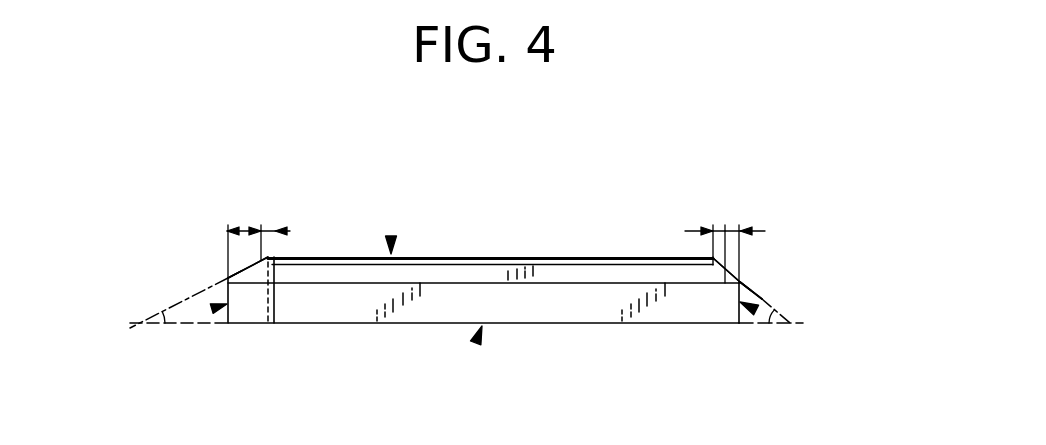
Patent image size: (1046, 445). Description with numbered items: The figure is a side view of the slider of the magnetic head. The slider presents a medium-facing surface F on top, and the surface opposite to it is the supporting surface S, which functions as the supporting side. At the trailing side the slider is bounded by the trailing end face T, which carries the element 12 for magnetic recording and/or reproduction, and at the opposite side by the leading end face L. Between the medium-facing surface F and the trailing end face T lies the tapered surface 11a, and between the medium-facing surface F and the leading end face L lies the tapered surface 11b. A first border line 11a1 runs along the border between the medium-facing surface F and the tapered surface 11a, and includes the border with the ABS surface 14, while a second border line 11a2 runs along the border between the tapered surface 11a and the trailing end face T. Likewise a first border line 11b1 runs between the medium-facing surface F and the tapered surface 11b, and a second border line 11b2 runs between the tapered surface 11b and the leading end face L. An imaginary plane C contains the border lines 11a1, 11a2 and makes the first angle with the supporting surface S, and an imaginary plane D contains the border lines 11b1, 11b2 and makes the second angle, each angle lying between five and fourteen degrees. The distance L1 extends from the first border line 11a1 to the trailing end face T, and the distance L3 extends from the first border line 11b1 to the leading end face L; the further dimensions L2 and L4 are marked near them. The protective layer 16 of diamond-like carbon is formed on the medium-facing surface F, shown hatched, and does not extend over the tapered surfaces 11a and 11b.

The tapered surface 11a is at (228, 278).
The first border line 11a1 is at (262, 262).
The second border line 11a2 is at (228, 279).
The tapered surface 11b is at (740, 280).
The first border line 11b1 is at (725, 283).
The second border line 11b2 is at (741, 277).
The element 12 is at (268, 323).
The ABS surface 14 is at (282, 263).
The protective layer 16 is at (530, 258).
The medium-facing surface F is at (391, 237).
The supporting surface S is at (476, 343).
The trailing end face T is at (212, 309).
The leading end face L is at (756, 311).
The imaginary plane C is at (172, 304).
The imaginary plane D is at (764, 297).
The distance L1 is at (249, 231).
The length L2 is at (268, 231).
The distance L3 is at (731, 231).
The length L4 is at (720, 231).